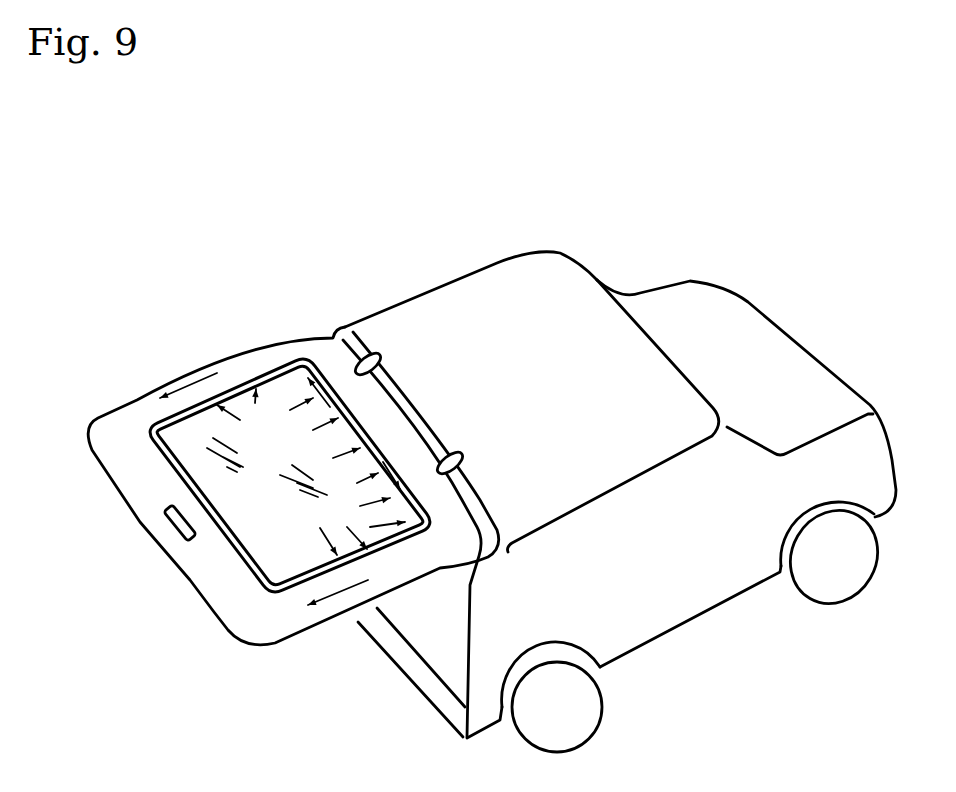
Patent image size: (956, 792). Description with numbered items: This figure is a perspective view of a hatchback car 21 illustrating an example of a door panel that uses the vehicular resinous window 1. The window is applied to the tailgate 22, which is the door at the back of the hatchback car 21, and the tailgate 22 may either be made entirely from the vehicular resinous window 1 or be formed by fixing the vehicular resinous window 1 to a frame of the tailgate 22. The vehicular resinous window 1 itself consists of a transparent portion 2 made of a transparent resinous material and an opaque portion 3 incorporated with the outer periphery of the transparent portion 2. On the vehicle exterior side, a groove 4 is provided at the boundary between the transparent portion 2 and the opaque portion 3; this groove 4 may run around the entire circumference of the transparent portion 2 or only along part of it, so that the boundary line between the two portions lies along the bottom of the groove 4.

The vehicular resinous window 1 is at (280, 437).
The transparent portion 2 is at (287, 533).
The opaque portion 3 is at (300, 623).
The groove 4 is at (178, 485).
The hatchback car 21 is at (497, 310).
The tailgate 22 is at (207, 610).